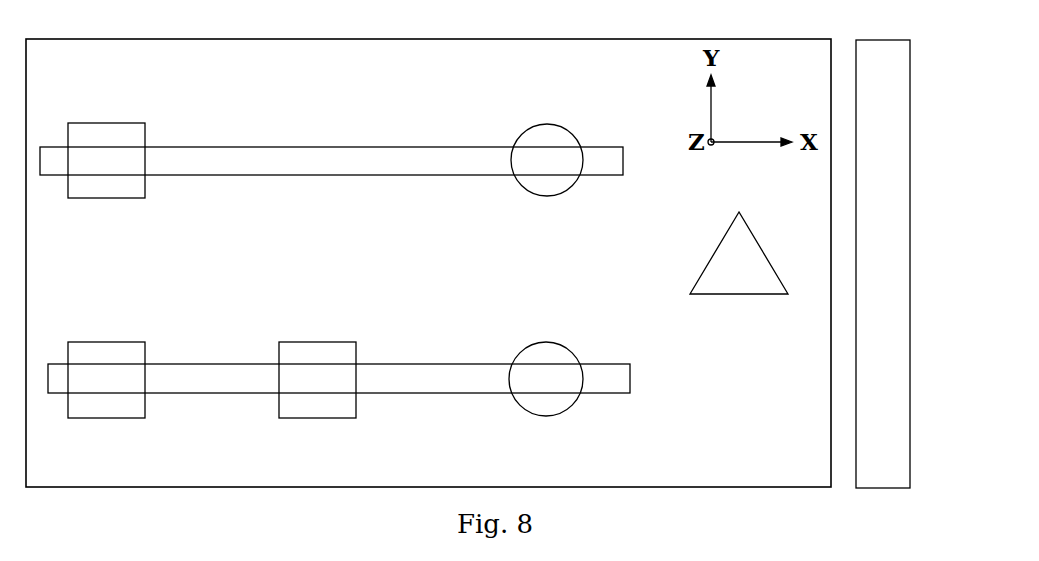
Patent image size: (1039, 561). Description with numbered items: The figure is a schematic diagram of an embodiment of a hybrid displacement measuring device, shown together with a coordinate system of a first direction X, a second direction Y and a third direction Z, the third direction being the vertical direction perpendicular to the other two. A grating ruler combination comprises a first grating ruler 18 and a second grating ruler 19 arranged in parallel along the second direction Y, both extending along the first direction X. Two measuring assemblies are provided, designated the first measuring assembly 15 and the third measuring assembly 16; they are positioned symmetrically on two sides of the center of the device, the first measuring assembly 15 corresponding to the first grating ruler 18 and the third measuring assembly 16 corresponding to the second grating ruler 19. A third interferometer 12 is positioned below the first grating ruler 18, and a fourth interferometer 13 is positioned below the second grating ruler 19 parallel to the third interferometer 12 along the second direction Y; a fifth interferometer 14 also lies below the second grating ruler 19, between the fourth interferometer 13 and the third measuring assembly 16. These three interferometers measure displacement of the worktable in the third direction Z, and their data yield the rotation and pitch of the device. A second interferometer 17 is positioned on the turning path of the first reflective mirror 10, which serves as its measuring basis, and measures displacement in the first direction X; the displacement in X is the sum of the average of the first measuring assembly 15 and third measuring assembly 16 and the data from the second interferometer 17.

The first reflective mirror 10 is at (911, 313).
The third interferometer 12 is at (133, 198).
The fourth interferometer 13 is at (133, 418).
The fifth interferometer 14 is at (345, 418).
The first measuring assembly 15 is at (575, 190).
The third measuring assembly 16 is at (578, 405).
The second interferometer 17 is at (770, 295).
The first grating ruler 18 is at (348, 175).
The second grating ruler 19 is at (176, 364).